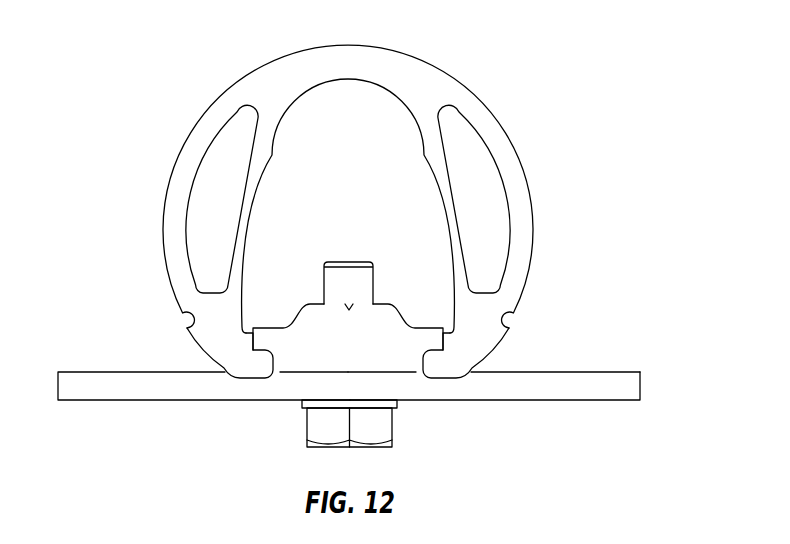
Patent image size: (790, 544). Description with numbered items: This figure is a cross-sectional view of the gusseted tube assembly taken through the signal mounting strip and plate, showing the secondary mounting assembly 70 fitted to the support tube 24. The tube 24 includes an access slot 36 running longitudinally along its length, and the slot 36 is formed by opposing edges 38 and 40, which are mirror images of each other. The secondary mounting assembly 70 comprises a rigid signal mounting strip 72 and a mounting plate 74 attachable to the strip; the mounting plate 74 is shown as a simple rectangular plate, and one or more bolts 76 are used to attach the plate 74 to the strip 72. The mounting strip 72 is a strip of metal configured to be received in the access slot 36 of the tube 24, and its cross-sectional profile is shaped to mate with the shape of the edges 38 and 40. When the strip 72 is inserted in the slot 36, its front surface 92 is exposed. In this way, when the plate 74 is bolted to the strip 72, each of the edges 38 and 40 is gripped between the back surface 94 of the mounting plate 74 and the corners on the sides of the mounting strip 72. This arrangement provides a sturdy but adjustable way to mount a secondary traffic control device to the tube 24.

The support tube 24 is at (513, 146).
The edge of access slot 38 is at (242, 357).
The edge of access slot 40 is at (458, 357).
The signal mounting strip 72 is at (307, 330).
The bolt 76 is at (363, 283).
The secondary mounting assembly 70 is at (112, 403).
The mounting plate 74 is at (570, 388).
The back surface of mounting plate 94 is at (607, 372).
The access slot 36 is at (280, 373).
The front surface 92 is at (405, 373).